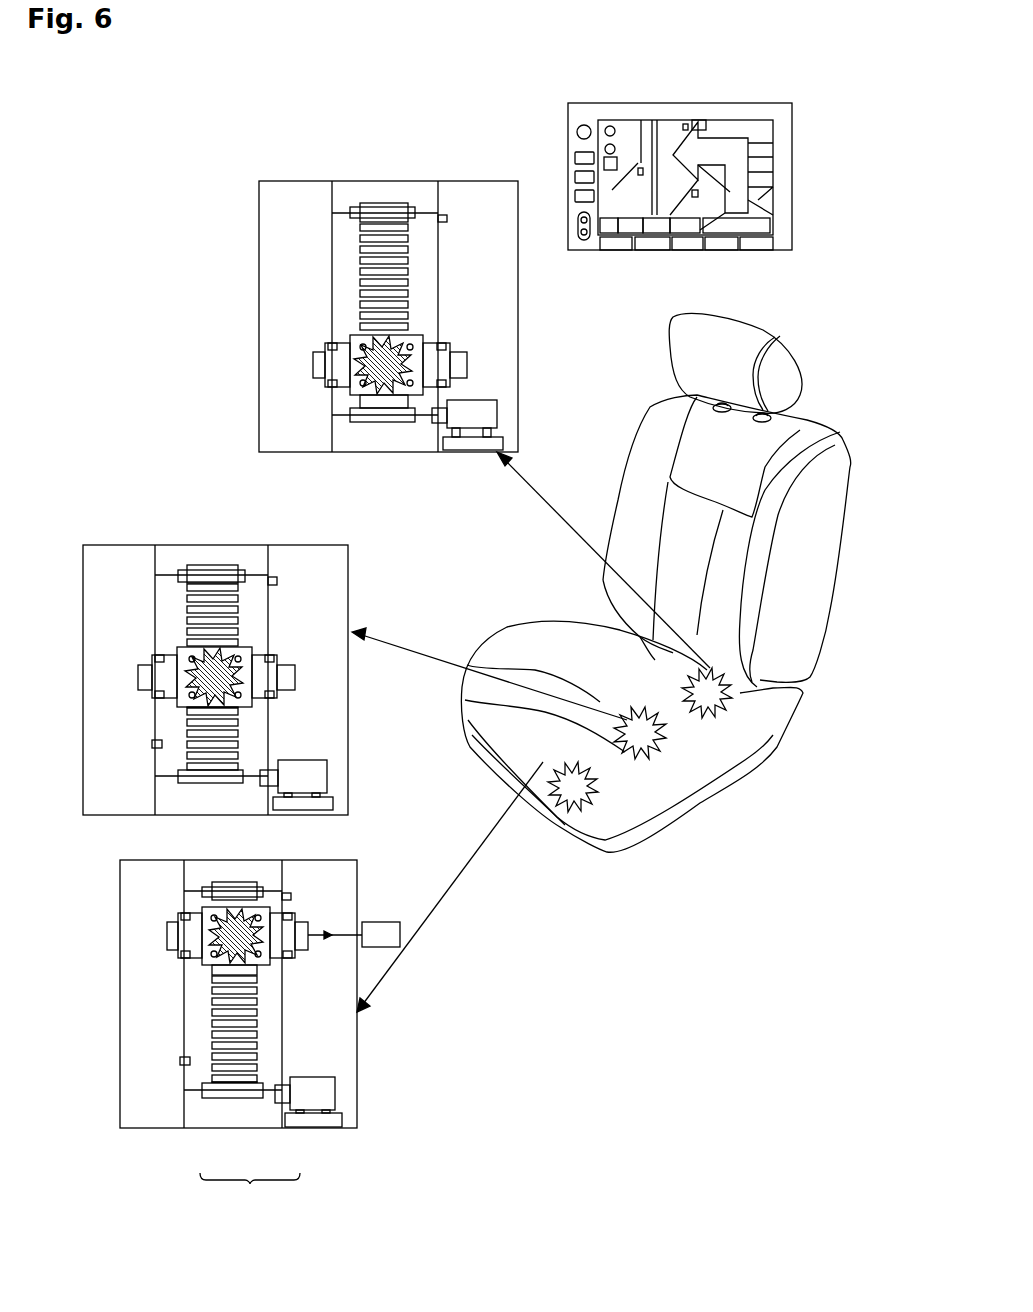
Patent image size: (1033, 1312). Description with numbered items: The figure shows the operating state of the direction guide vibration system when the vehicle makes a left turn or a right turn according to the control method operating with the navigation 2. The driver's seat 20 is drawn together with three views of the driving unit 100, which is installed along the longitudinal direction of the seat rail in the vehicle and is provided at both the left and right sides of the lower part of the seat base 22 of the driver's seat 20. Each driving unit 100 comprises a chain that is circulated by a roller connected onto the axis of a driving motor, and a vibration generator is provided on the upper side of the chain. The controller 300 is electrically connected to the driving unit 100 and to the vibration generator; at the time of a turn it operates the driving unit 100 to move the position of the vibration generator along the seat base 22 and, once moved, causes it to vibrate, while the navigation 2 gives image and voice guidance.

The navigation 2 is at (677, 103).
The driver's seat 20 is at (810, 336).
The seat base 22 is at (593, 672).
The driving unit 100 is at (250, 1188).
The controller 300 is at (380, 922).